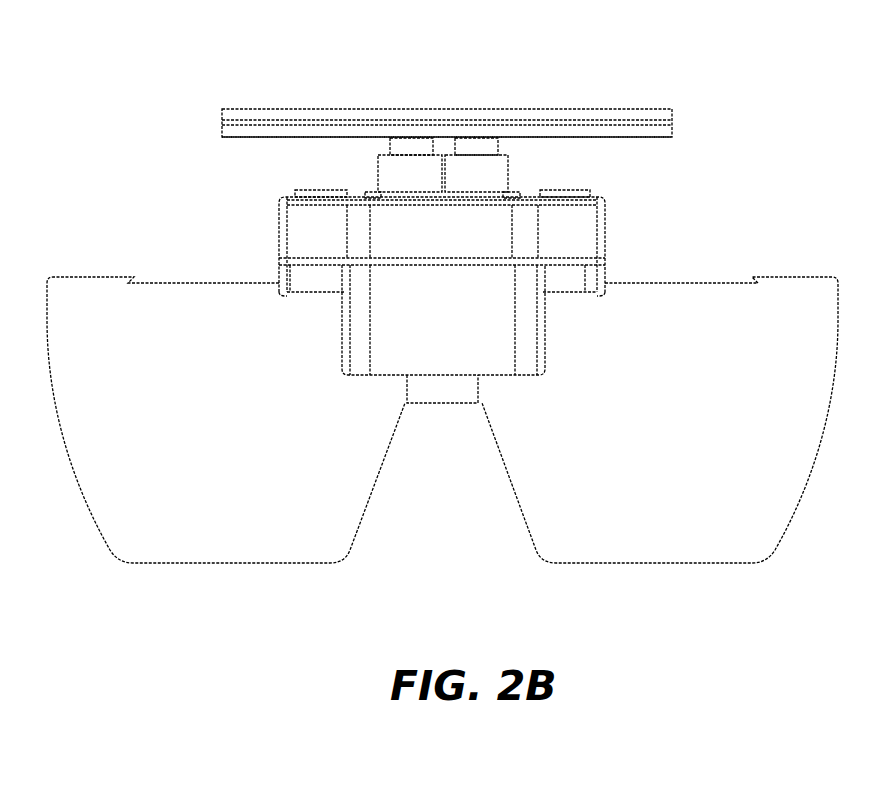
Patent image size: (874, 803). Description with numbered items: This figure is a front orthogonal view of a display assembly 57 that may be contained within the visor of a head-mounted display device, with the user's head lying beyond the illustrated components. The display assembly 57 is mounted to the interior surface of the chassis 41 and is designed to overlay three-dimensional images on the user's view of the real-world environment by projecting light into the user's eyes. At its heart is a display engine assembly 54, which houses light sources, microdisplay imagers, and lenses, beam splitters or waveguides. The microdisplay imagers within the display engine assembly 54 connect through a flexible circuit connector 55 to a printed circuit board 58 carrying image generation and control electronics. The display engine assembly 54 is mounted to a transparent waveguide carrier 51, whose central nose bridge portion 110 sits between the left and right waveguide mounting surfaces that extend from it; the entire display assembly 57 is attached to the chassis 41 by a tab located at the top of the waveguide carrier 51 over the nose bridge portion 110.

The strip / bar 41 is at (635, 108).
The lower surface of bar 58 is at (248, 137).
The connector 55 is at (378, 186).
The housing 54 is at (597, 232).
The assembly 57 is at (706, 191).
The tube / neck 110 is at (435, 405).
The outer housing 51 is at (358, 532).